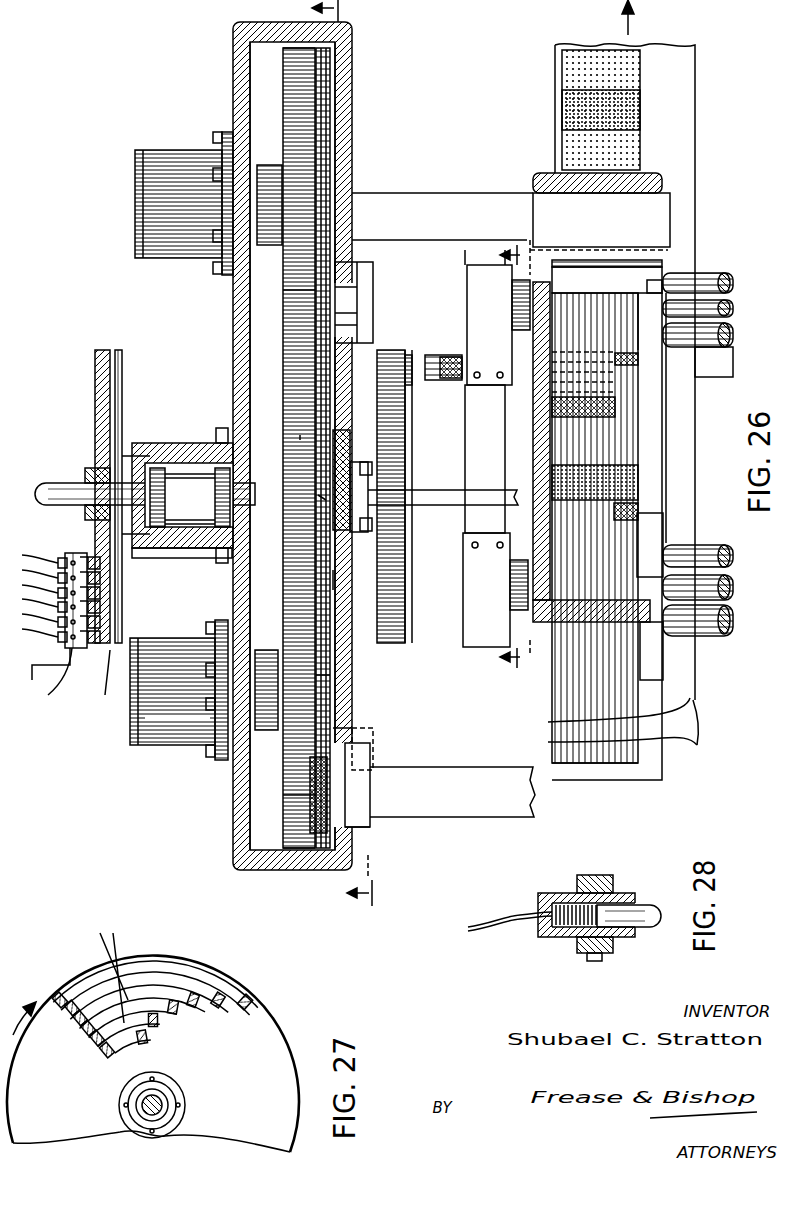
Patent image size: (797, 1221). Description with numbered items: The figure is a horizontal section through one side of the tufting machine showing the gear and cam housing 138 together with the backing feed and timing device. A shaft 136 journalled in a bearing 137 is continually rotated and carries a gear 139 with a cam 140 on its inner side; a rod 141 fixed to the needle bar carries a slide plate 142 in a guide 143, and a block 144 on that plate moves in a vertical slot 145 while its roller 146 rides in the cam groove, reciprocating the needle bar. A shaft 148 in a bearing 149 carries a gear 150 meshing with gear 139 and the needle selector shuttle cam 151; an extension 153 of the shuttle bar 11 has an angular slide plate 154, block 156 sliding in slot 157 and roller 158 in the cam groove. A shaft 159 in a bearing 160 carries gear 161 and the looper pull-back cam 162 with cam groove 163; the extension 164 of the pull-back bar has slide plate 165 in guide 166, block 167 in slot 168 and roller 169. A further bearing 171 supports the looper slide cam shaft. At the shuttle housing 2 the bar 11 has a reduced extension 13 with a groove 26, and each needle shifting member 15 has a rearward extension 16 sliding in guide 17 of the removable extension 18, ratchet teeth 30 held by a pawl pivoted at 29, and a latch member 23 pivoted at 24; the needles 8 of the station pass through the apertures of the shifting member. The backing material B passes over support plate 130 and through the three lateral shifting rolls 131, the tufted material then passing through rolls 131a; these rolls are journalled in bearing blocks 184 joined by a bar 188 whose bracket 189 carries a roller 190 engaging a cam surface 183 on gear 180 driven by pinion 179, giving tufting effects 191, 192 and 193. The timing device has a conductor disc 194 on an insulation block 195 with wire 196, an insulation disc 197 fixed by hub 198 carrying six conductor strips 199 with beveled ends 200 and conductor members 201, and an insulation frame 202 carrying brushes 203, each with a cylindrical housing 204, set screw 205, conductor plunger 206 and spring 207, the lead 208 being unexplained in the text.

In FIG. 26, the needle selector shuttle housing 2 is at (528, 182).
In FIG. 26, the needles 8 is at (638, 495).
In FIG. 26, the needle selector shuttle bar 11 is at (645, 225).
In FIG. 26, the reduced extension 13 is at (618, 280).
In FIG. 26, the needle shifting member 15 is at (638, 458).
In FIG. 26, the rearward extension 16 is at (578, 568).
In FIG. 26, the guide 17 is at (626, 568).
In FIG. 26, the removable extension 18 is at (648, 642).
In FIG. 26, the latch member 23 is at (612, 358).
In FIG. 26, the pivot 24 is at (640, 358).
In FIG. 26, the groove 26 is at (650, 298).
In FIG. 26, the pivot 29 is at (352, 453).
In FIG. 26, the ratchet teeth 30 is at (644, 376).
In FIG. 26, the backing material B is at (695, 710).
In FIG. 26, the support plate 130 is at (698, 742).
In FIG. 26, the lateral shifting rolls 131 is at (735, 632).
In FIG. 26, the lateral shifting rolls 131a is at (722, 272).
In FIG. 26, the shaft 136 is at (50, 487).
In FIG. 27, the shaft 136 is at (160, 1100).
In FIG. 26, the bearing 137 is at (187, 443).
In FIG. 26, the gear and cam housing 138 is at (236, 365).
In FIG. 26, the gear 139 is at (290, 400).
In FIG. 26, the cam 140 is at (300, 435).
In FIG. 26, the rod 141 is at (440, 490).
In FIG. 26, the slide plate 142 is at (358, 478).
In FIG. 26, the guide 143 is at (367, 532).
In FIG. 26, the block 144 is at (345, 455).
In FIG. 26, the vertical slot 145 is at (338, 590).
In FIG. 26, the roller 146 is at (318, 495).
In FIG. 26, the shaft 148 is at (255, 195).
In FIG. 26, the bearing 149 is at (177, 155).
In FIG. 26, the gear 150 is at (283, 75).
In FIG. 26, the needle selector shuttle cam 151 is at (322, 70).
In FIG. 26, the extension 153 is at (405, 190).
In FIG. 26, the slide plate 154 is at (365, 283).
In FIG. 26, the block 156 is at (345, 297).
In FIG. 26, the slot 157 is at (345, 320).
In FIG. 26, the roller 158 is at (295, 290).
In FIG. 26, the shaft 159 is at (255, 725).
In FIG. 26, the bearing 160 is at (177, 746).
In FIG. 26, the gear 161 is at (300, 850).
In FIG. 26, the looper pull-back cam 162 is at (322, 675).
In FIG. 26, the cam groove 163 is at (318, 840).
In FIG. 26, the extension 164 is at (455, 775).
In FIG. 26, the slide plate 165 is at (374, 745).
In FIG. 26, the guide 166 is at (370, 828).
In FIG. 26, the block 167 is at (371, 800).
In FIG. 26, the slot 168 is at (335, 728).
In FIG. 26, the roller 169 is at (290, 795).
In FIG. 26, the bearing 171 is at (182, 558).
In FIG. 26, the pinion 179 is at (408, 530).
In FIG. 26, the gear 180 is at (392, 643).
In FIG. 26, the cam surface 183 is at (408, 405).
In FIG. 26, the bearing blocks 184 is at (468, 295).
In FIG. 26, the bar 188 is at (498, 445).
In FIG. 26, the bracket 189 is at (448, 355).
In FIG. 26, the roller 190 is at (462, 380).
In FIG. 26, the tufting effect 191 is at (628, 150).
In FIG. 26, the tufting 192 is at (625, 110).
In FIG. 26, the tuft spacing 193 is at (628, 60).
In FIG. 26, the conductor disc 194 is at (122, 365).
In FIG. 26, the insulation block 195 is at (128, 455).
In FIG. 26, the wire 196 is at (78, 690).
In FIG. 26, the insulation disc 197 is at (96, 360).
In FIG. 27, the insulation disc 197 is at (263, 1033).
In FIG. 26, the hub 198 is at (92, 470).
In FIG. 27, the hub 198 is at (172, 1105).
In FIG. 26, the conductor strips 199 is at (90, 660).
In FIG. 27, the conductor strips 199 is at (104, 940).
In FIG. 27, the beveled ends 200 is at (240, 975).
In FIG. 26, the conductor members 201 is at (105, 696).
In FIG. 26, the insulation frame 202 is at (46, 697).
In FIG. 28, the insulation frame 202 is at (598, 890).
In FIG. 26, the brushes 203 is at (88, 560).
In FIG. 28, the brushes 203 is at (638, 932).
In FIG. 26, the cylindrical housing 204 is at (58, 562).
In FIG. 28, the cylindrical housing 204 is at (550, 900).
In FIG. 28, the set screw 205 is at (594, 956).
In FIG. 28, the conductor plunger 206 is at (635, 908).
In FIG. 28, the spring 207 is at (562, 928).
In FIG. 26, the lead wire 208 is at (32, 680).
In FIG. 28, the lead wire 208 is at (494, 920).